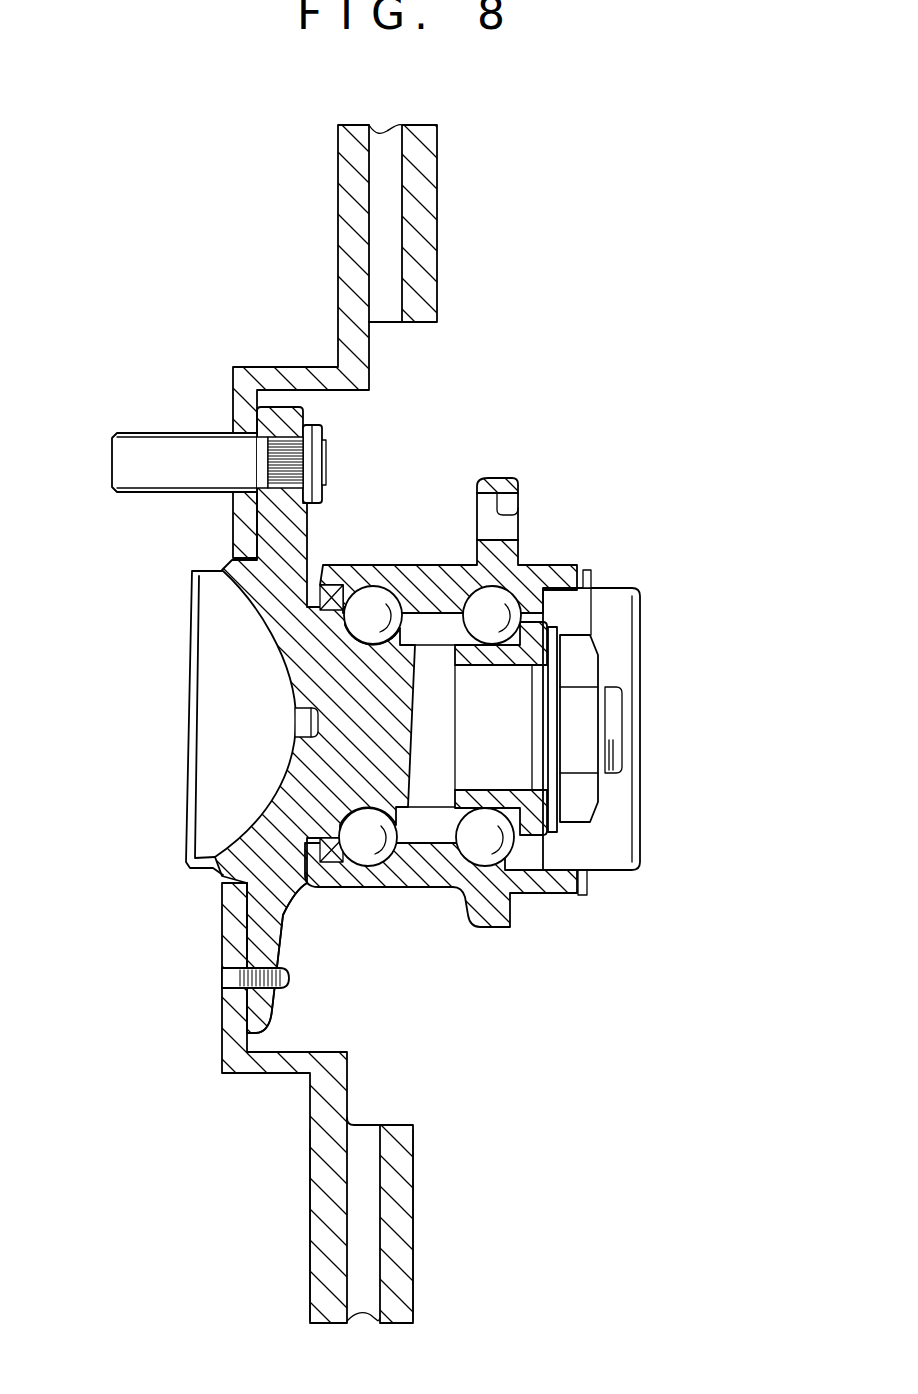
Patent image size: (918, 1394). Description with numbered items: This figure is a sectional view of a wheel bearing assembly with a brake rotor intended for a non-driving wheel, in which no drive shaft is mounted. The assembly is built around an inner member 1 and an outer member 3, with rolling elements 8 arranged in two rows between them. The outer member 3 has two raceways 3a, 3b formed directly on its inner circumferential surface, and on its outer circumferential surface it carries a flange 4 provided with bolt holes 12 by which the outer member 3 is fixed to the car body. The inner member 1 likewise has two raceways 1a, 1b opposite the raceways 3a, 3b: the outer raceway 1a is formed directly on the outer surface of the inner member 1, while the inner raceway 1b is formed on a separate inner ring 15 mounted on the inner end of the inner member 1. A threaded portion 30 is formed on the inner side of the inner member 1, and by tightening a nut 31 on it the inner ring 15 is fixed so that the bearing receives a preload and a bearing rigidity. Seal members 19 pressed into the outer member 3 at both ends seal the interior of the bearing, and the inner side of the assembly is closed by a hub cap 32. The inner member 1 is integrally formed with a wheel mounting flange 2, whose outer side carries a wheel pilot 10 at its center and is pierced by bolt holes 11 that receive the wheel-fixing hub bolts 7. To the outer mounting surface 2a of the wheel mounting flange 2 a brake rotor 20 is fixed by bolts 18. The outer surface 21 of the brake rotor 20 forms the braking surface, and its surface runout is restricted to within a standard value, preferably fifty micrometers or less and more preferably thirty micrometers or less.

The inner member 1 is at (191, 573).
The outer raceway 1a is at (368, 641).
The inner raceway 1b is at (480, 637).
The wheel mounting flange 2 is at (265, 1010).
The outer mounting surface 2a is at (225, 1010).
The outer member 3 is at (471, 483).
The raceway 3a is at (377, 598).
The raceway 3b is at (590, 574).
The flange 4 is at (490, 478).
The hub bolt 7 is at (163, 452).
The rolling elements 8 is at (468, 663).
The wheel pilot 10 is at (225, 873).
The bolt hole 11 is at (282, 463).
The bolt hole 12 is at (515, 518).
The inner ring 15 is at (533, 690).
The bolt 18 is at (235, 978).
The seal member 19 is at (316, 606).
The brake rotor 20 is at (318, 1195).
The outer surface 21 is at (310, 1253).
The threaded portion 30 is at (610, 752).
The nut 31 is at (580, 793).
The hub cap 32 is at (617, 877).